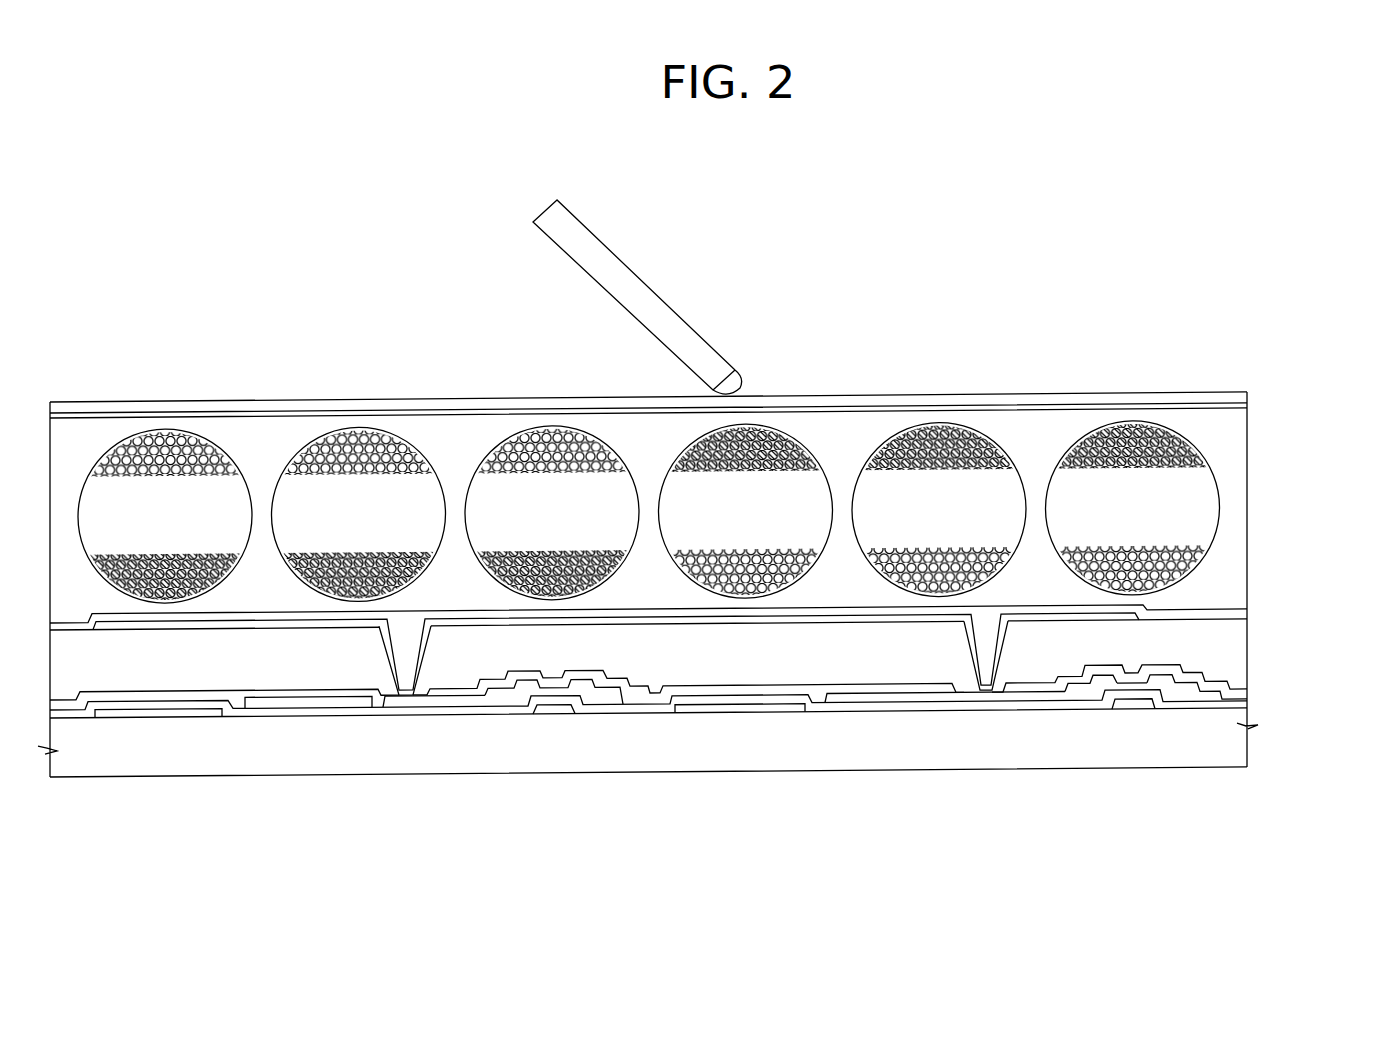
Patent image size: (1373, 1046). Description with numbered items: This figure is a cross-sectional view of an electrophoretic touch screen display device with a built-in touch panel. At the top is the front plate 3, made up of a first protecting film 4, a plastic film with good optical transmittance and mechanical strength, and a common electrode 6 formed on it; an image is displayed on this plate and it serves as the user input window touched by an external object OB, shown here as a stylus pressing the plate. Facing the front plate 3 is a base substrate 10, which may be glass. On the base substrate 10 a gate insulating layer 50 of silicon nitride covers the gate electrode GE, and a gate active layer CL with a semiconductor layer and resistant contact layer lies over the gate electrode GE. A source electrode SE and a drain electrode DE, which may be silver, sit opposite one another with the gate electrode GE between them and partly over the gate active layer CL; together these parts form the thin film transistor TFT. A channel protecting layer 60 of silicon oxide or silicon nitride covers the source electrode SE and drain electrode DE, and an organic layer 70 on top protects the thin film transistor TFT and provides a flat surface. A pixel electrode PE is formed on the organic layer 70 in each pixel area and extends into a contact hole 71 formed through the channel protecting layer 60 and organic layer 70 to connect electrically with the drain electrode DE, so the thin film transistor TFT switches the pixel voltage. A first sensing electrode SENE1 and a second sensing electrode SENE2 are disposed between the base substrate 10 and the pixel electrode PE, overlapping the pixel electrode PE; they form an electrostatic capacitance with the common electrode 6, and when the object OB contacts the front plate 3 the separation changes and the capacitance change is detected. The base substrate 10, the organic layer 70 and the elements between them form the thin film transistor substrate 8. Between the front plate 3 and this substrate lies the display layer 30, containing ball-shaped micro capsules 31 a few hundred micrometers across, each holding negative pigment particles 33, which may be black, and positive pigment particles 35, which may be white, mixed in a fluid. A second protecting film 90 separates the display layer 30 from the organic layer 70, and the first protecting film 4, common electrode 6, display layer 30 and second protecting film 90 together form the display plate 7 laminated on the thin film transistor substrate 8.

The front plate 3 is at (693, 392).
The first protecting film 4 is at (1248, 392).
The common electrode 6 is at (675, 406).
The display plate 7 is at (704, 557).
The display layer 30 is at (688, 470).
The micro capsule 31 is at (938, 422).
The negative pigment particles 33 is at (977, 430).
The positive pigment particles 35 is at (866, 522).
The second protecting film 90 is at (693, 612).
The thin film transistor substrate 8 is at (700, 749).
The organic layer 70 is at (683, 729).
The contact hole 71 is at (990, 636).
The channel protecting layer 60 is at (1245, 690).
The gate insulating layer 50 is at (1245, 698).
The base substrate 10 is at (683, 742).
The external object OB is at (660, 287).
The pixel electrode PE is at (838, 618).
The first sensing electrode SENE1 is at (738, 706).
The second sensing electrode SENE2 is at (921, 697).
The thin film transistor TFT is at (1141, 776).
The drain electrode DE is at (1046, 703).
The gate electrode GE is at (1132, 700).
The gate active layer CL is at (1176, 692).
The source electrode SE is at (1206, 684).